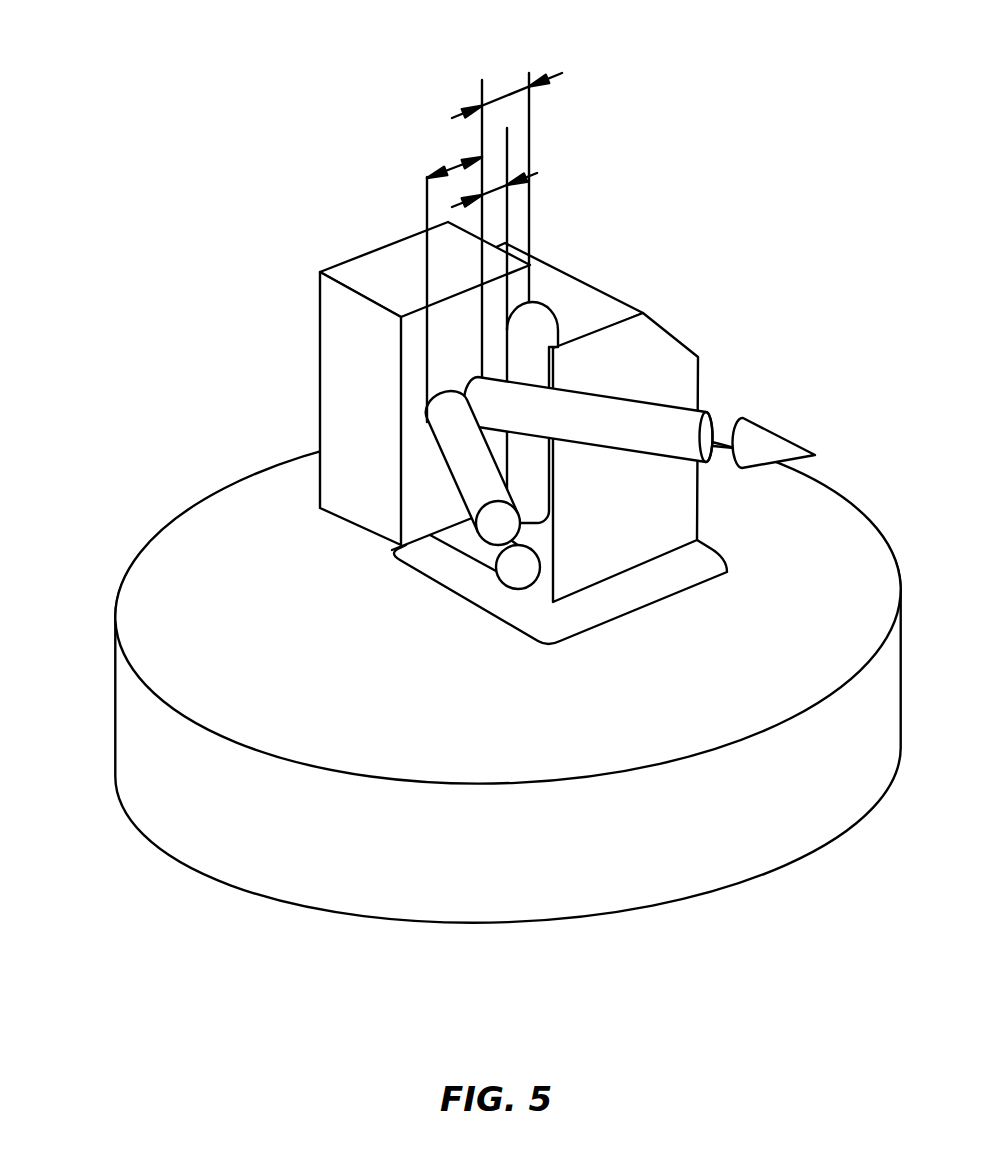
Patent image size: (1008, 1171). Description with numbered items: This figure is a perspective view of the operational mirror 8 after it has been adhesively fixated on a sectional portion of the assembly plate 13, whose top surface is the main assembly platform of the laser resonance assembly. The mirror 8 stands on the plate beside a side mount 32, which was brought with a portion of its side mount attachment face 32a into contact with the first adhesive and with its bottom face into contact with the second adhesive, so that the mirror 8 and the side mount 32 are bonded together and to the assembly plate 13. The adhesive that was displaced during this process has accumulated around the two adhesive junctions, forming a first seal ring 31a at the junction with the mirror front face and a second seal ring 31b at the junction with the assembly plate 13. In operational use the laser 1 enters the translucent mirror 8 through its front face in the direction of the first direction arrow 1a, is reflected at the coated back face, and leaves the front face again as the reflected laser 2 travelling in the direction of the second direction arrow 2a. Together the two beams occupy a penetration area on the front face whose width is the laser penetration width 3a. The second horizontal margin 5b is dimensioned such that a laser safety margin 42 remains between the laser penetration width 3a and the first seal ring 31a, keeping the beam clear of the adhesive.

The laser 1 is at (488, 527).
The first direction arrow 1a is at (518, 568).
The reflected laser 2 is at (694, 424).
The second direction arrow 2a is at (782, 450).
The laser penetration width 3a is at (460, 161).
The second horizontal margin 5b is at (507, 90).
The mirror 8 is at (318, 360).
The assembly plate 13 is at (143, 738).
The first seal ring 31a is at (547, 322).
The second seal ring 31b is at (713, 557).
The side mount 32 is at (665, 343).
The side mount attachment face 32a is at (455, 537).
The laser safety margin 42 is at (492, 189).